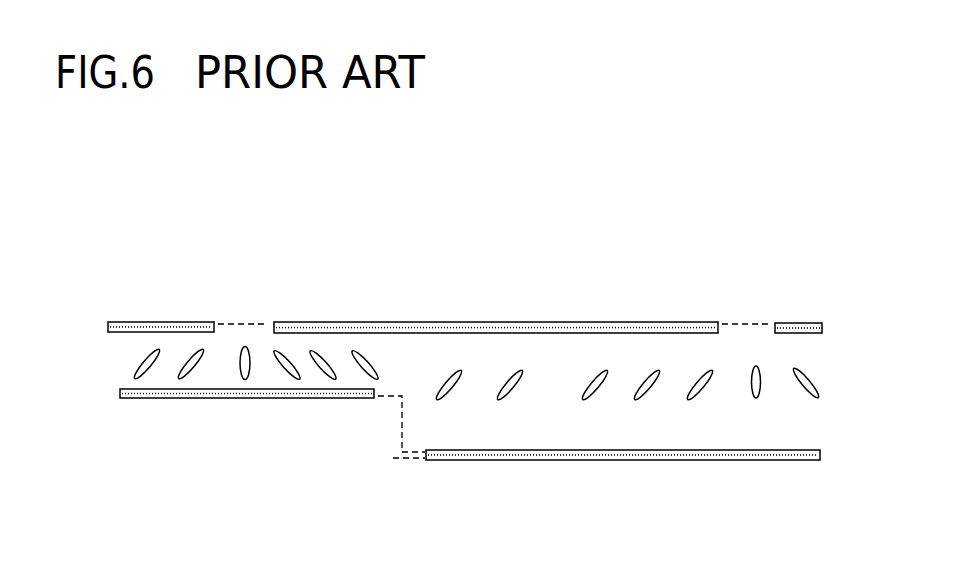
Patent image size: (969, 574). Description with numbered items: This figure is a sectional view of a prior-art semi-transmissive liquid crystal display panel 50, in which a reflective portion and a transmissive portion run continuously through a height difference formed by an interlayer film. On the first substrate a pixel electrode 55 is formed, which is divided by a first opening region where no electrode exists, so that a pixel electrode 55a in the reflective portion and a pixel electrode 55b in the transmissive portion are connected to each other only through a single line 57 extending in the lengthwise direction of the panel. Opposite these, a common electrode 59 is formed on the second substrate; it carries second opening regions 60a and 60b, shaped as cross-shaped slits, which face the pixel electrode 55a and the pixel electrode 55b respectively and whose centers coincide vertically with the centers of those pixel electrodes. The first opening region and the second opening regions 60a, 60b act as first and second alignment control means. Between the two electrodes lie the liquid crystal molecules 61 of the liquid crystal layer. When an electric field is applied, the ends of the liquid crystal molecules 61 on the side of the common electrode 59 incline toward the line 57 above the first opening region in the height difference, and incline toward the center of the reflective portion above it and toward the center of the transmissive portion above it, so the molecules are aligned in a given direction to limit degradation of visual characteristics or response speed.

The semi-transmissive liquid crystal display panel 50 is at (146, 203).
The common electrode 59 is at (421, 322).
The second opening region 60a is at (261, 322).
The second opening region 60b is at (759, 322).
The pixel electrode 55 is at (272, 476).
The pixel electrode 55a is at (283, 397).
The pixel electrode 55b is at (425, 458).
The line 57 is at (403, 420).
The liquid crystal molecules 61 is at (760, 392).